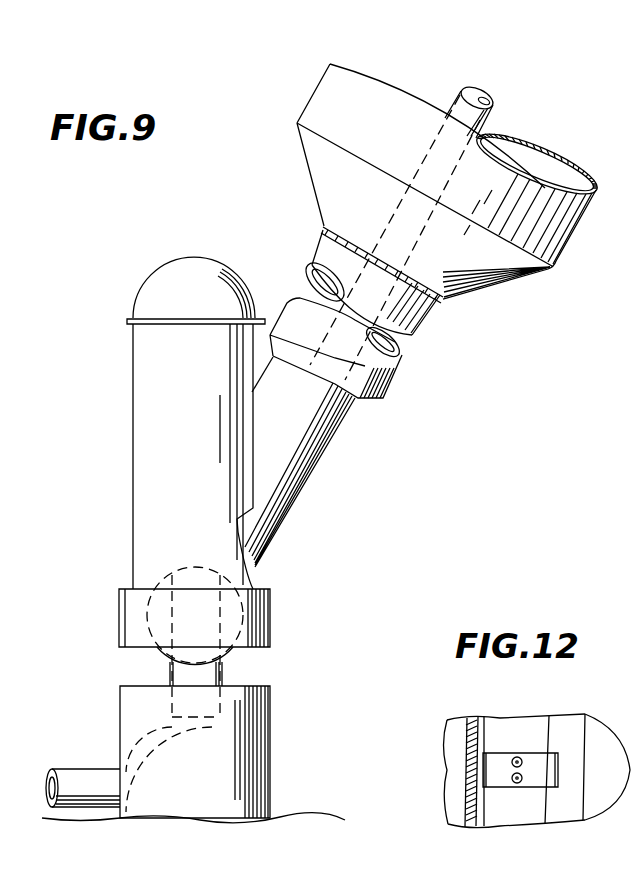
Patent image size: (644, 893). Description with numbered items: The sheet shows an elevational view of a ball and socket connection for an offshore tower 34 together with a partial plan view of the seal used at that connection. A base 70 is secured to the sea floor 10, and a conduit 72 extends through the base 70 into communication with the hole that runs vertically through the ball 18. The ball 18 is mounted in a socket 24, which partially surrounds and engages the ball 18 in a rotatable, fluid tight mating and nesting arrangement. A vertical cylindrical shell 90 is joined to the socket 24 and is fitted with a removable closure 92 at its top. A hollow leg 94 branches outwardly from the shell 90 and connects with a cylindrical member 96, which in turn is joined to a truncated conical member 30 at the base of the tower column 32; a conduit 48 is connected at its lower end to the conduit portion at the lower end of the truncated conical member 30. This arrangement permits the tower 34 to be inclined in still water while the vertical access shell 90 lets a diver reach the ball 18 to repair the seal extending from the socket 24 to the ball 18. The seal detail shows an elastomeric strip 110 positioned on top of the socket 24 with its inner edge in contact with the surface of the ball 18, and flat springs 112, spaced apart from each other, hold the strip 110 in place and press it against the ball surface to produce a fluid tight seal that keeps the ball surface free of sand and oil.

In FIG. 9, the sea floor 10 is at (307, 816).
In FIG. 9, the ball 18 is at (228, 658).
In FIG. 9, the socket 24 is at (118, 608).
In FIG. 9, the truncated conical member 30 is at (506, 280).
In FIG. 9, the column 32 is at (323, 97).
In FIG. 9, the offshore tower 34 is at (586, 228).
In FIG. 9, the conduit 48 is at (492, 114).
In FIG. 9, the base 70 is at (262, 748).
In FIG. 9, the conduit 72 is at (75, 768).
In FIG. 9, the vertical cylindrical shell 90 is at (148, 418).
In FIG. 9, the removable closure 92 is at (169, 268).
In FIG. 9, the hollow leg 94 is at (318, 468).
In FIG. 9, the cylindrical member 96 is at (422, 318).
In FIG. 12, the elastomeric strip 110 is at (534, 730).
In FIG. 12, the flat springs 112 is at (497, 765).